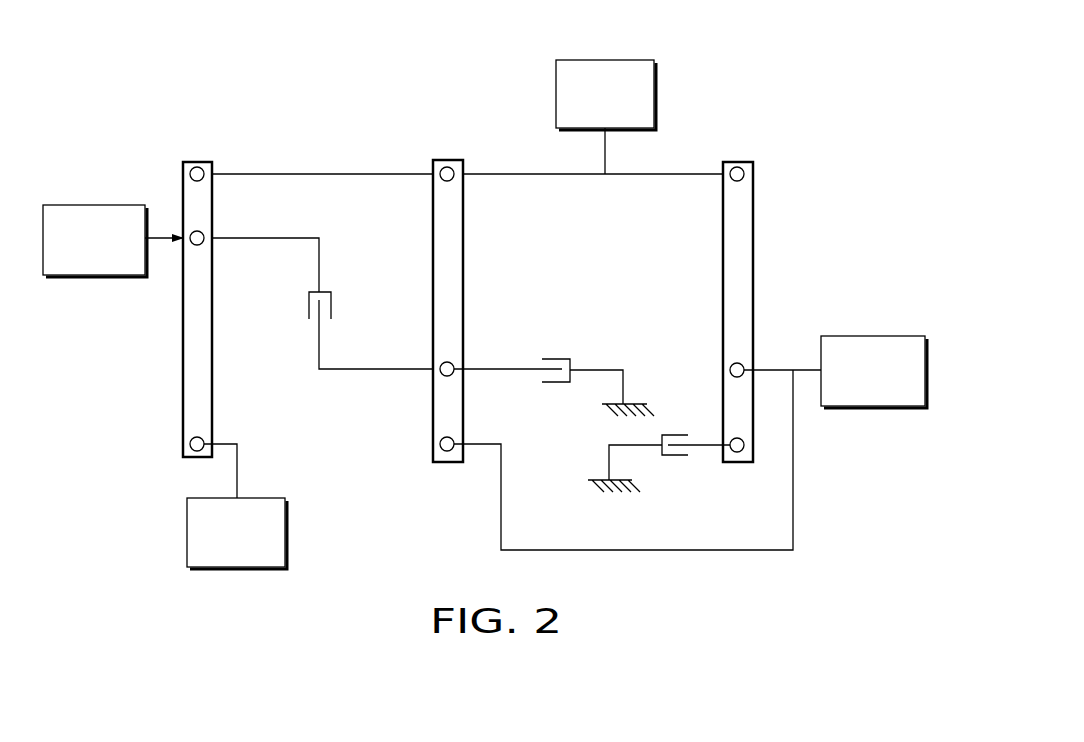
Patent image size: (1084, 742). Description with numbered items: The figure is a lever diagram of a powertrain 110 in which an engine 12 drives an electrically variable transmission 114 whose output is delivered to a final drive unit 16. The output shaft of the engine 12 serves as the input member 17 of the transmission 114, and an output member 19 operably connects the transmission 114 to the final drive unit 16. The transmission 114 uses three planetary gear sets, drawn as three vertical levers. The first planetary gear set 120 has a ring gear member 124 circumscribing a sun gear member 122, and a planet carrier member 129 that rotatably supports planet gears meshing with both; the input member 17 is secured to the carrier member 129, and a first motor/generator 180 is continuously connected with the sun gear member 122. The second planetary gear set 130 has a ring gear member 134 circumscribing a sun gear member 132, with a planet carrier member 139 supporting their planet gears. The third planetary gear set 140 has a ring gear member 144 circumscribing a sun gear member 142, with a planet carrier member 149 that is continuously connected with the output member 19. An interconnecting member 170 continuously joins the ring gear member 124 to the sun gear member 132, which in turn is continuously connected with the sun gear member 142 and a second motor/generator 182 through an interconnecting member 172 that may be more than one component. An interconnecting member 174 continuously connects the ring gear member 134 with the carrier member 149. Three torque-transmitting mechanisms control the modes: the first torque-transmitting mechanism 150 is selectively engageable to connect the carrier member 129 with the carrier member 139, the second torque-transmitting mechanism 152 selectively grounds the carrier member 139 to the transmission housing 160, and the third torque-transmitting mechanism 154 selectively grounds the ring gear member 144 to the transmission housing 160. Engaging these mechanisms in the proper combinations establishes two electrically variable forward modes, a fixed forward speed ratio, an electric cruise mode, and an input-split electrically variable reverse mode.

The engine 12 is at (113, 180).
The final drive unit 16 is at (860, 427).
The input member 17 is at (167, 238).
The output member 19 is at (803, 370).
The powertrain 110 is at (243, 65).
The transmission 114 is at (395, 65).
The first planetary gear set 120 is at (172, 452).
The sun gear member 122 is at (197, 437).
The ring gear member 124 is at (197, 167).
The planet carrier member 129 is at (200, 245).
The second planetary gear set 130 is at (423, 452).
The sun gear member 132 is at (447, 167).
The ring gear member 134 is at (440, 444).
The planet carrier member 139 is at (447, 362).
The third planetary gear set 140 is at (770, 450).
The sun gear member 142 is at (737, 167).
The ring gear member 144 is at (737, 438).
The planet carrier member 149 is at (737, 363).
The first torque-transmitting mechanism 150 is at (302, 312).
The second torque-transmitting mechanism 152 is at (562, 352).
The third torque-transmitting mechanism 154 is at (670, 463).
The transmission housing 160 is at (607, 405).
The interconnecting member 170 is at (340, 174).
The interconnecting member 172 is at (518, 174).
The interconnecting member 174 is at (692, 551).
The first motor/generator 180 is at (217, 568).
The second motor/generator 182 is at (582, 58).